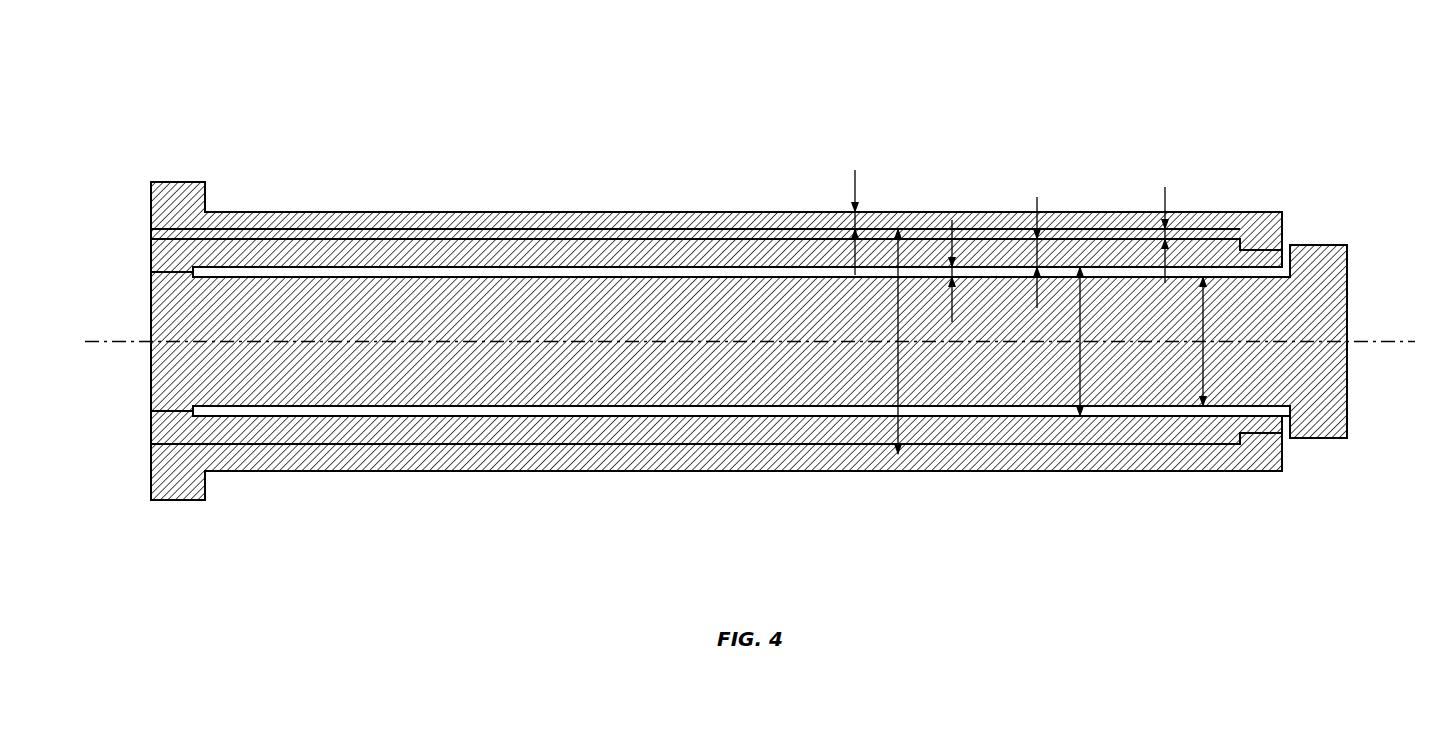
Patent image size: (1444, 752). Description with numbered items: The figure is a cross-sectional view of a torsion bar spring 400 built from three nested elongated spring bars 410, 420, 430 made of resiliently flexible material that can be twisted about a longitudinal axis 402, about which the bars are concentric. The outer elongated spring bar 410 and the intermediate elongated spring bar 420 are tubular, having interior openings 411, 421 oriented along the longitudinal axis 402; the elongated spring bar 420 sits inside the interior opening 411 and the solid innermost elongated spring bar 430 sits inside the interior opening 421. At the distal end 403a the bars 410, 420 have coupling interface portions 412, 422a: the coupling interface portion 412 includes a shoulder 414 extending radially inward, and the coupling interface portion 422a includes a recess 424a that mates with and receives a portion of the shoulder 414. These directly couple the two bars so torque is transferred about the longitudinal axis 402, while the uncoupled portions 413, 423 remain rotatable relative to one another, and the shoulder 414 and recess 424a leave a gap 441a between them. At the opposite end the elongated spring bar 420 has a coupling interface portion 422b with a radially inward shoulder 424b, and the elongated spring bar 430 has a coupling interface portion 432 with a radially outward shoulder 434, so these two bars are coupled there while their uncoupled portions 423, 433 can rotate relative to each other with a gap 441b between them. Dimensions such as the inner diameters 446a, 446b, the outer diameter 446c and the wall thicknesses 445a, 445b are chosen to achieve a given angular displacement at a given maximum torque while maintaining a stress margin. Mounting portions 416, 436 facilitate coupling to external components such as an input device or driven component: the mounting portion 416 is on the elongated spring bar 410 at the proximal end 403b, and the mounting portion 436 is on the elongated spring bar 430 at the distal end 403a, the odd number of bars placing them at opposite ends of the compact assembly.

The torsion bar spring 400 is at (686, 58).
The longitudinal axis 402 is at (1383, 345).
The distal end 403a is at (1340, 185).
The proximal end 403b is at (158, 137).
The elongated spring bar 410 is at (378, 204).
The interior opening 411 is at (148, 231).
The coupling interface portion 412 is at (1289, 229).
The uncoupled portion 413 is at (416, 483).
The shoulder 414 is at (1262, 250).
The mounting portion 416 is at (175, 171).
The elongated spring bar 420 is at (468, 230).
The interior opening 421 is at (1266, 414).
The coupling interface portion 422a is at (1290, 258).
The coupling interface portion 422b is at (148, 266).
The uncoupled portion 423 is at (540, 451).
The recess 424a is at (1262, 250).
The shoulder 424b is at (175, 265).
The elongated spring bar 430 is at (559, 269).
The coupling interface portion 432 is at (148, 278).
The uncoupled portion 433 is at (625, 413).
The shoulder 434 is at (172, 270).
The mounting portion 436 is at (1357, 235).
The gap 441a is at (1167, 187).
The gap 441b is at (952, 222).
The wall thickness 445a is at (857, 185).
The wall thickness 445b is at (1037, 197).
The inner diameter 446a is at (898, 365).
The inner diameter 446b is at (1080, 365).
The outer diameter 446c is at (1203, 365).